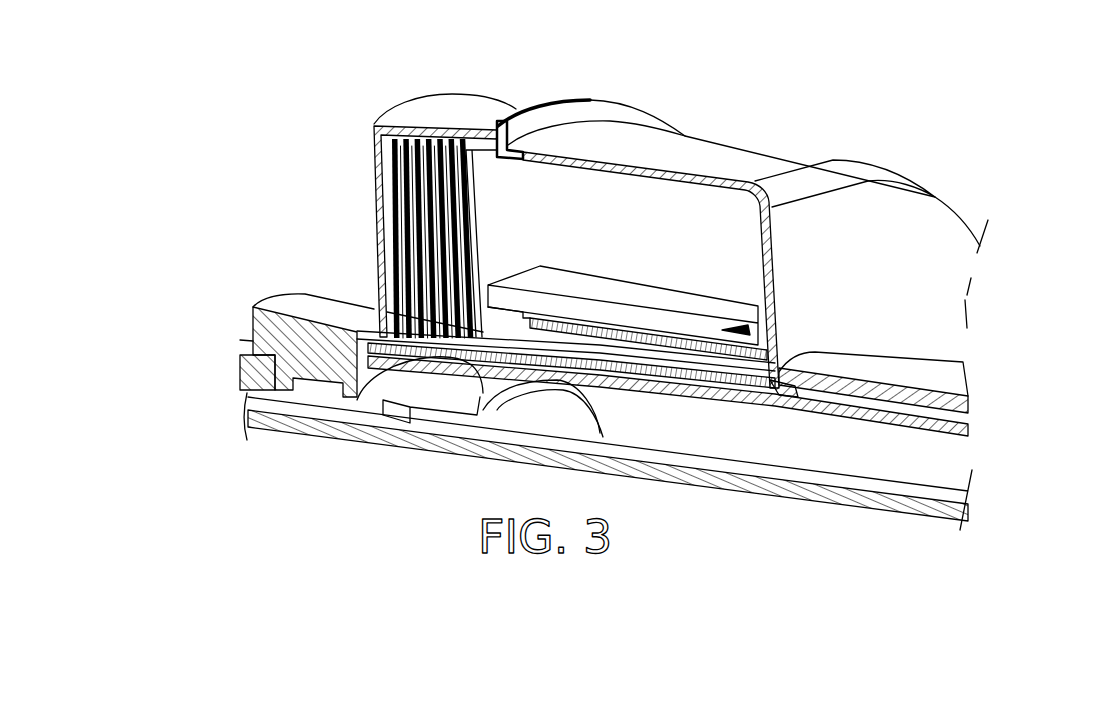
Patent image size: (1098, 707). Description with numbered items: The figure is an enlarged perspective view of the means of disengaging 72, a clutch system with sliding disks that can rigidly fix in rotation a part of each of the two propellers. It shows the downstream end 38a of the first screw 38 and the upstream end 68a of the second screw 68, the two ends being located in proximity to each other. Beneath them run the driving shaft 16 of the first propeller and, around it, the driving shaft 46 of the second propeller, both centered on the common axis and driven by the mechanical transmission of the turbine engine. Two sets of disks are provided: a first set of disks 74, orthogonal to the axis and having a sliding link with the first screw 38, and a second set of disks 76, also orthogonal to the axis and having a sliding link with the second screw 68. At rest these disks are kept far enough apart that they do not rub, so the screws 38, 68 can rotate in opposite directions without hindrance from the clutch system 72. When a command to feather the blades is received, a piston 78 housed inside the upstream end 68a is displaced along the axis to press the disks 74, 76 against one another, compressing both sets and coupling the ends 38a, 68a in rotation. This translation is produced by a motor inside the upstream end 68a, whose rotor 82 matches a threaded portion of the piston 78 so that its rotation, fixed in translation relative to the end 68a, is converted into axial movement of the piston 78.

The means of disengaging 72 is at (661, 78).
The downstream end of the first screw 38a is at (438, 108).
The first set of disks 74 is at (427, 139).
The upstream end of the second screw 68a is at (761, 145).
The piston 78 is at (476, 182).
The rotor 82 is at (698, 294).
The first screw 38 is at (283, 333).
The second screw 68 is at (968, 402).
The driving shaft 46 is at (968, 427).
The driving shaft 16 is at (965, 505).
The second set of disks 76 is at (445, 338).